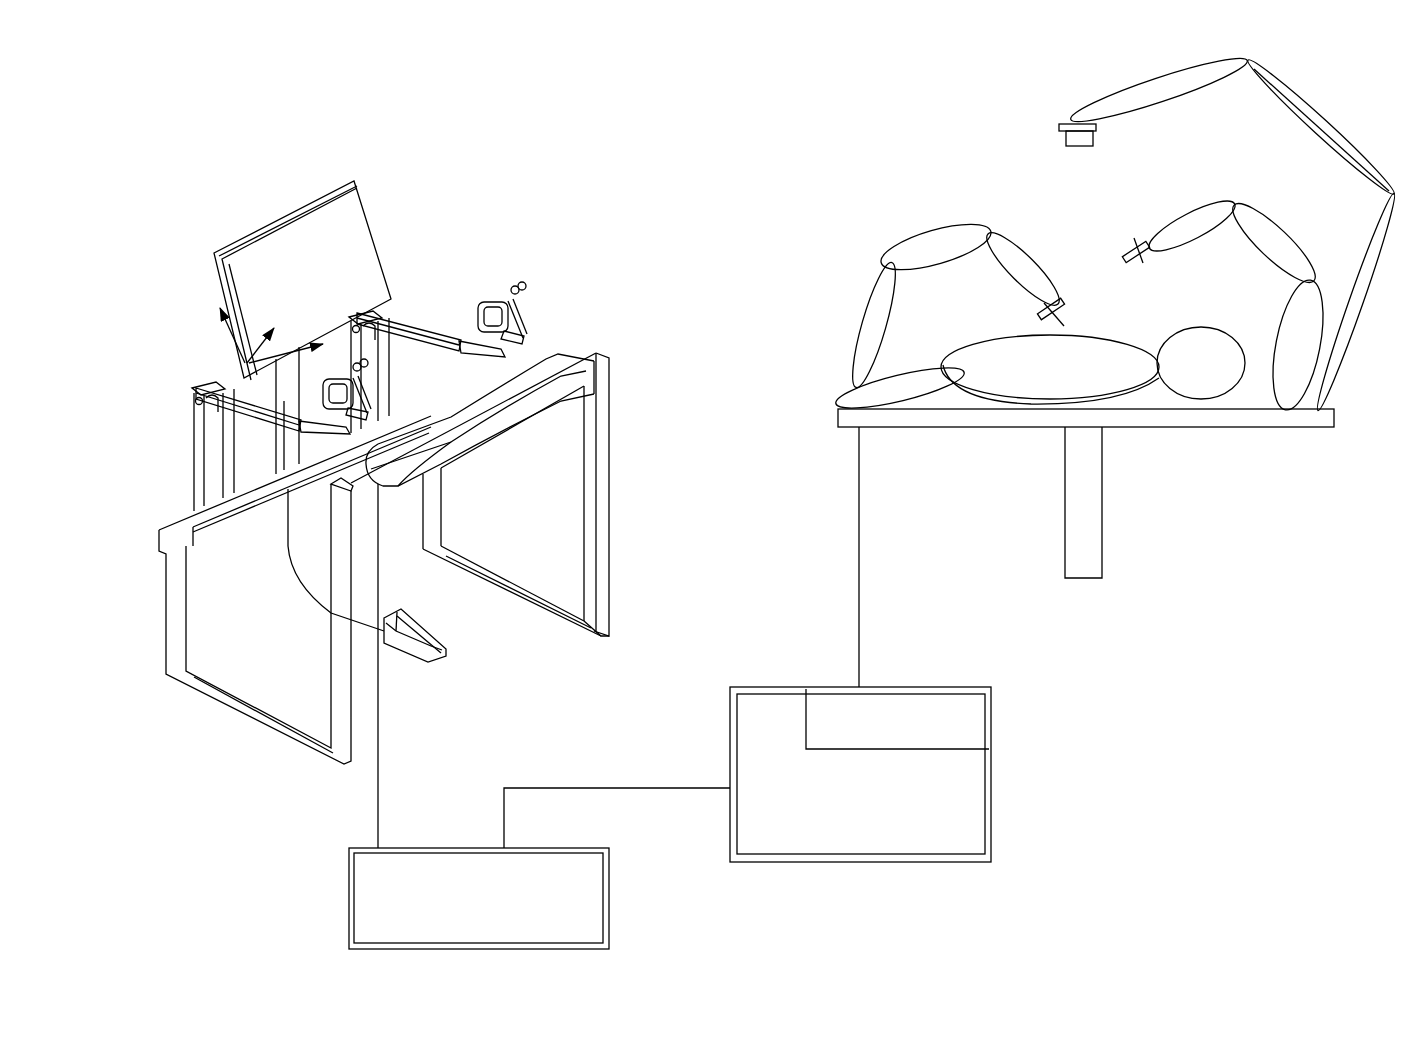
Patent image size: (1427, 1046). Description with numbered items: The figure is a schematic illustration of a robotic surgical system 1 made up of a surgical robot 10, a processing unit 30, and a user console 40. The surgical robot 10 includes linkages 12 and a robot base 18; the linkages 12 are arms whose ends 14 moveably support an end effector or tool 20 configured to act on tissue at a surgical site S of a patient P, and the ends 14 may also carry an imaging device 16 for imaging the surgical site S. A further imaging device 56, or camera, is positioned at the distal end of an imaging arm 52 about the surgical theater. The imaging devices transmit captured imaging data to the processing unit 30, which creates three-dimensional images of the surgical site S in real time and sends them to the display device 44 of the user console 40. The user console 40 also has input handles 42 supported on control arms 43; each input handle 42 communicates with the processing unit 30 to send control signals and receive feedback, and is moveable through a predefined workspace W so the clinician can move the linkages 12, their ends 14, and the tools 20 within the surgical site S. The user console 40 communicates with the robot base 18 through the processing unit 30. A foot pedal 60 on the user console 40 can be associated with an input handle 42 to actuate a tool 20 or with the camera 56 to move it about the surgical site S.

The robotic surgical system 1 is at (601, 128).
The surgical robot 10 is at (947, 111).
The linkages 12 is at (893, 216).
The end 14 is at (1157, 222).
The imaging device 16 is at (1137, 238).
The robot base 18 is at (872, 801).
The end effector or tool 20 is at (1066, 303).
The processing unit 30 is at (491, 913).
The user console 40 is at (225, 175).
The input handles 42 is at (508, 312).
The control arms 43 is at (412, 315).
The display device 44 is at (371, 205).
The imaging arm 52 is at (1343, 127).
The imaging device 56 is at (1060, 139).
The foot pedal 60 is at (440, 636).
The surgical site S is at (1103, 333).
The patient P is at (1100, 372).
The workspace W is at (520, 255).